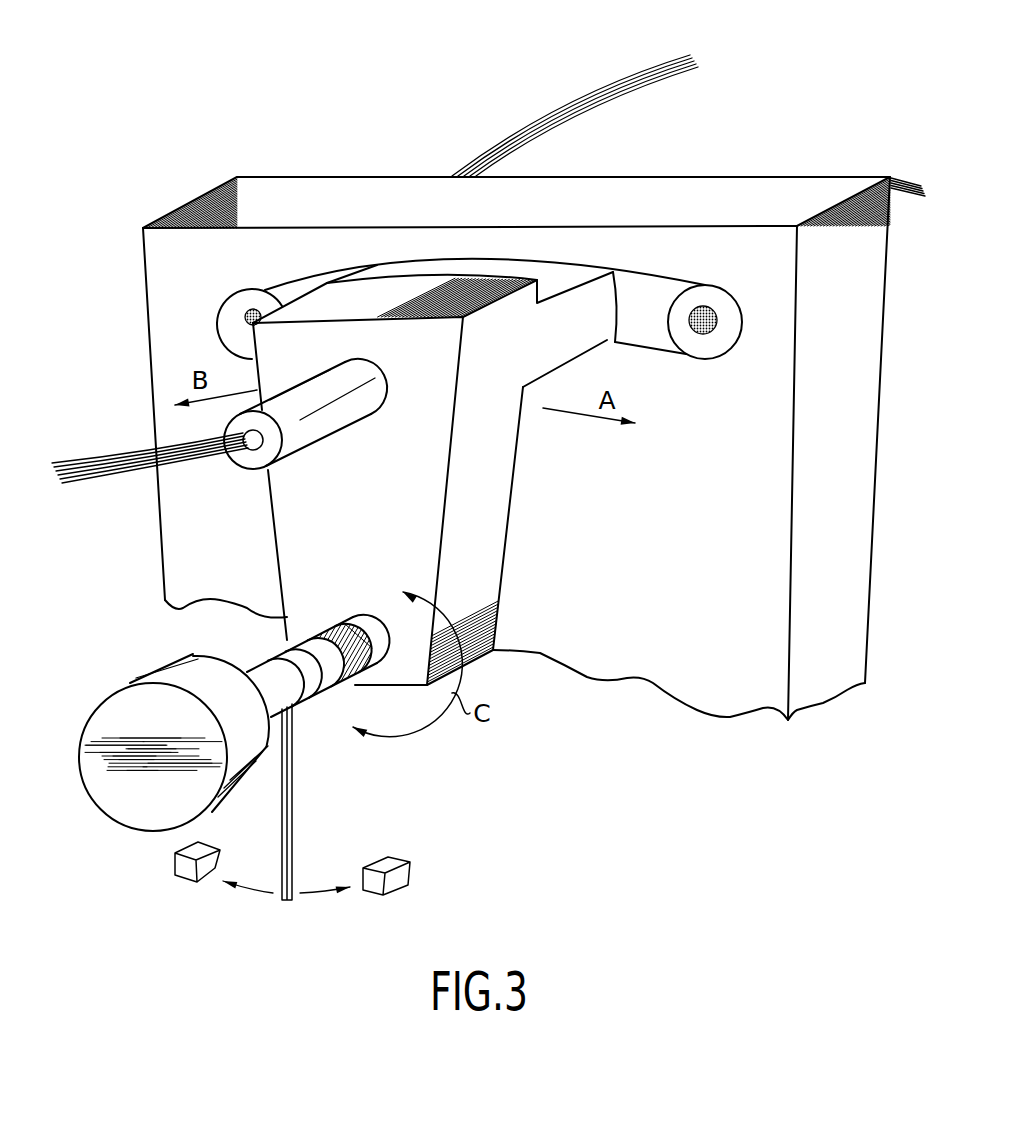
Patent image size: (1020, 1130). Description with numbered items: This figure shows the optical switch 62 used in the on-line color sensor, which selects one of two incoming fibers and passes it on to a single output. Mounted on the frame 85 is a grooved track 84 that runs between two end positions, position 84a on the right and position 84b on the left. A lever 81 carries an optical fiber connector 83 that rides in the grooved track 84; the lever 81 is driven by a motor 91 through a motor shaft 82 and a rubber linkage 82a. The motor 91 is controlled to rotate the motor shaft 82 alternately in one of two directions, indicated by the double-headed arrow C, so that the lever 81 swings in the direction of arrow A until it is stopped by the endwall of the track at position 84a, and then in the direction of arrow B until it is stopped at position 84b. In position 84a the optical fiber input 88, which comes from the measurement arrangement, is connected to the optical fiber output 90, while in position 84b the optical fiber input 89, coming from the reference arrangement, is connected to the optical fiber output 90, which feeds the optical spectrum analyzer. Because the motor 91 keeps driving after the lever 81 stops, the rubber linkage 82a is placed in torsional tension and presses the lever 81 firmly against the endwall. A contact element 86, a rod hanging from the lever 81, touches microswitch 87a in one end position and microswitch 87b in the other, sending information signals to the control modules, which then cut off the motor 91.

The optical switch 62 is at (165, 157).
The lever 81 is at (449, 475).
The motor shaft 82 is at (326, 669).
The rubber linkage 82a is at (327, 693).
The optical fiber connector 83 is at (580, 340).
The grooved track 84 is at (479, 316).
The position 84a is at (690, 360).
The position 84b is at (247, 290).
The frame 85 is at (868, 362).
The contact element 86 is at (295, 795).
The microswitch 87a is at (187, 872).
The microswitch 87b is at (375, 887).
The optical fiber input 88 is at (901, 183).
The optical fiber input 89 is at (603, 88).
The optical fiber output 90 is at (132, 480).
The motor 91 is at (137, 808).